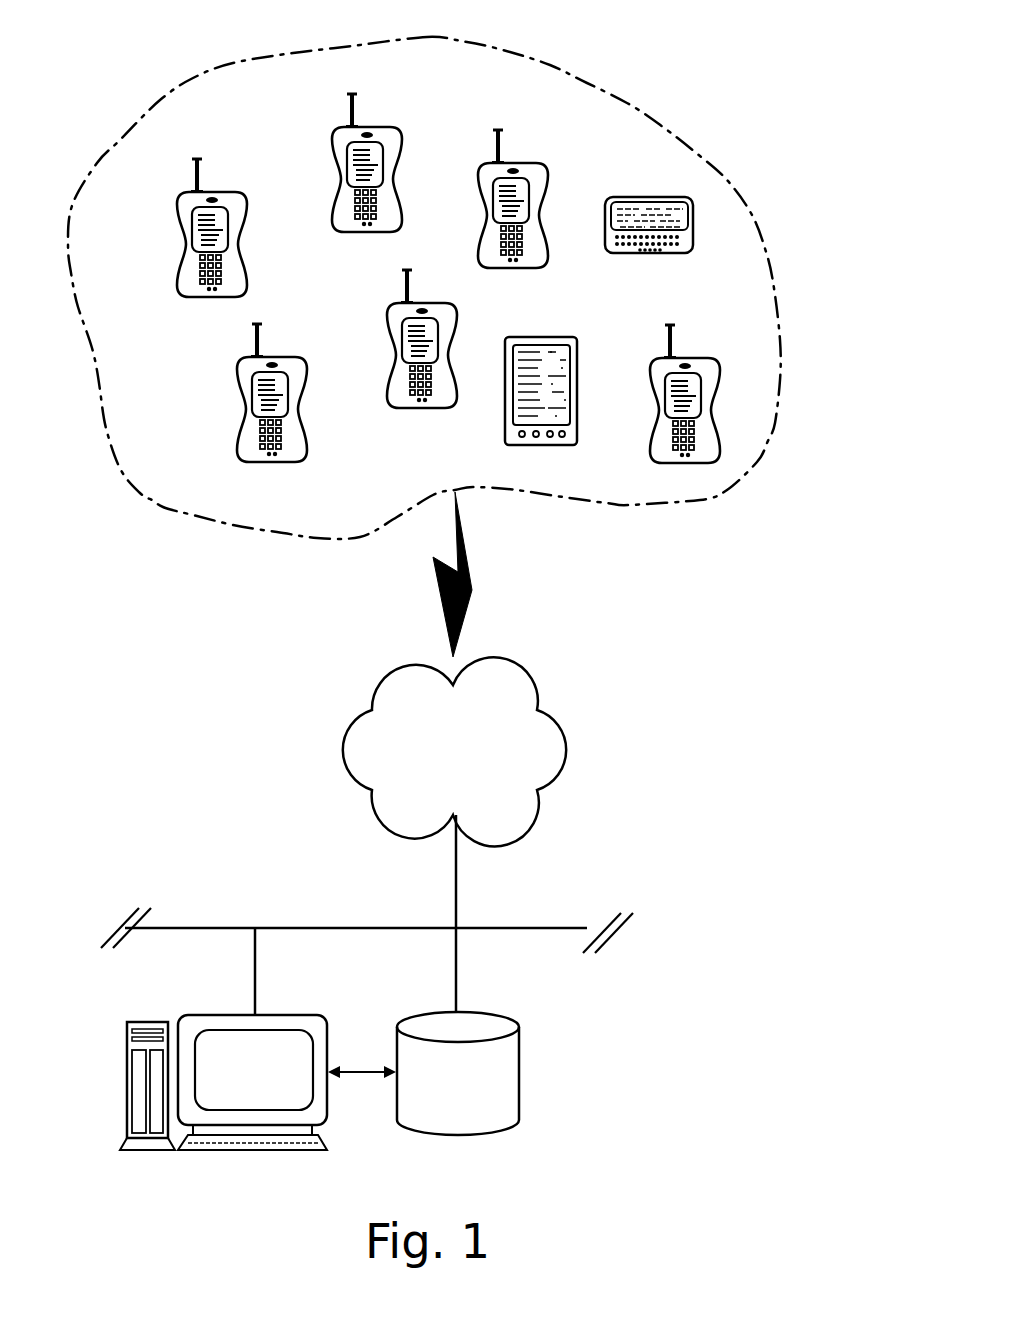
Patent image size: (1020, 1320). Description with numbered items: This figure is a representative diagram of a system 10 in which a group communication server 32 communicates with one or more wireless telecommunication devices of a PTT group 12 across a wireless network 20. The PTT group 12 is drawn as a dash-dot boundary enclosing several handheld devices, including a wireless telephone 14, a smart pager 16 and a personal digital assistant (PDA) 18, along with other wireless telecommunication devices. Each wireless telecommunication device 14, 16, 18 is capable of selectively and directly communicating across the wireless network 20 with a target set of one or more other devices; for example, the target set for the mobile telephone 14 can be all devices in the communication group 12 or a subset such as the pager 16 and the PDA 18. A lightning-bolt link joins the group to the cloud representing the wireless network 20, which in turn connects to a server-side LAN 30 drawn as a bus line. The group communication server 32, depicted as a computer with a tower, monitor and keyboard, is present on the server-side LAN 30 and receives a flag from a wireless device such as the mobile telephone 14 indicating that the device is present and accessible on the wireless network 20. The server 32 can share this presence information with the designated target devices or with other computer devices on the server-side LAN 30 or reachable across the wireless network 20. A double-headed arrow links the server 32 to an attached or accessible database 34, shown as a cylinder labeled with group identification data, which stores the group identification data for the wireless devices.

The system 10 is at (713, 58).
The PTT group 12 is at (146, 513).
The wireless telephone 14 is at (390, 127).
The smart pager 16 is at (655, 254).
The personal digital assistant (PDA) 18 is at (505, 410).
The wireless network 20 is at (567, 748).
The server-side LAN 30 is at (220, 928).
The group communication server 32 is at (224, 1014).
The database 34 is at (521, 1072).